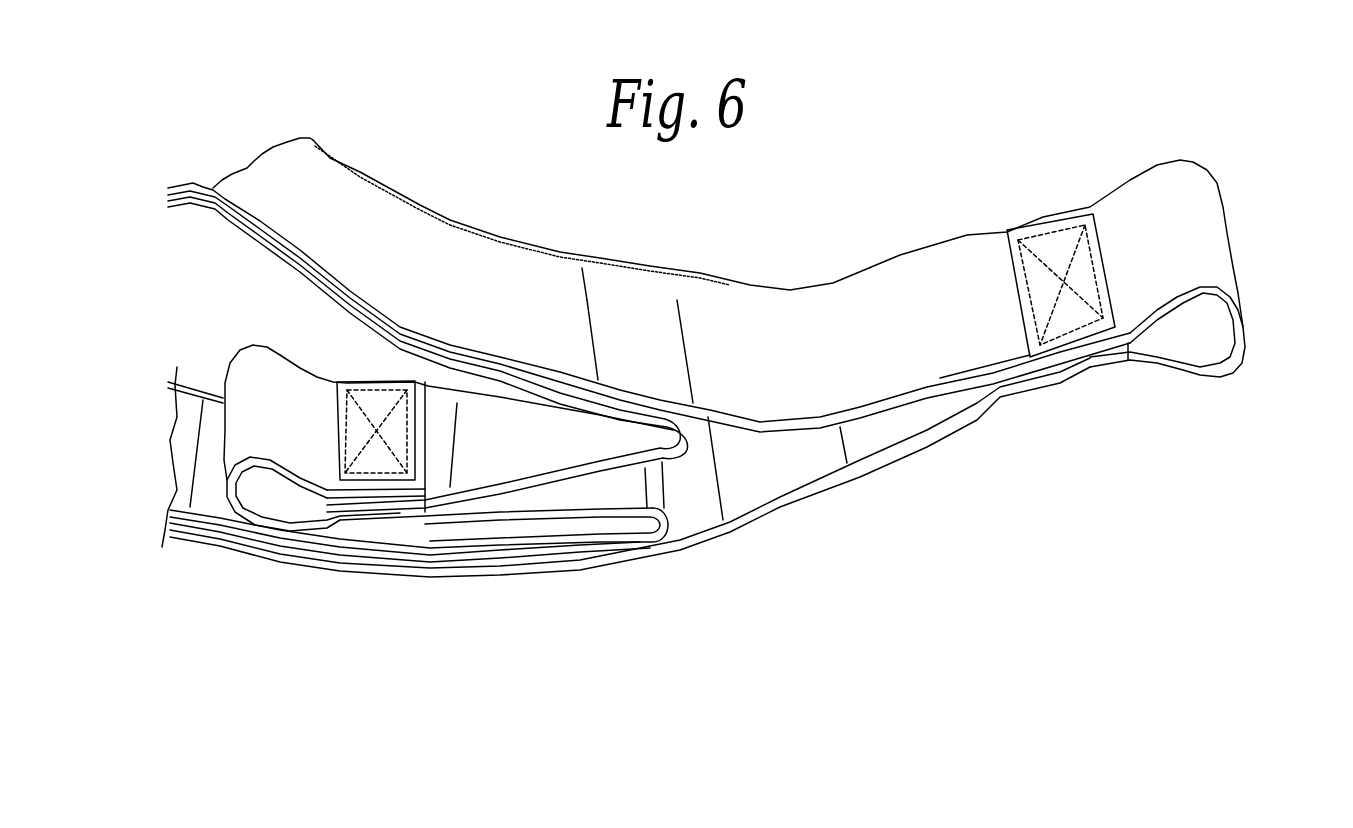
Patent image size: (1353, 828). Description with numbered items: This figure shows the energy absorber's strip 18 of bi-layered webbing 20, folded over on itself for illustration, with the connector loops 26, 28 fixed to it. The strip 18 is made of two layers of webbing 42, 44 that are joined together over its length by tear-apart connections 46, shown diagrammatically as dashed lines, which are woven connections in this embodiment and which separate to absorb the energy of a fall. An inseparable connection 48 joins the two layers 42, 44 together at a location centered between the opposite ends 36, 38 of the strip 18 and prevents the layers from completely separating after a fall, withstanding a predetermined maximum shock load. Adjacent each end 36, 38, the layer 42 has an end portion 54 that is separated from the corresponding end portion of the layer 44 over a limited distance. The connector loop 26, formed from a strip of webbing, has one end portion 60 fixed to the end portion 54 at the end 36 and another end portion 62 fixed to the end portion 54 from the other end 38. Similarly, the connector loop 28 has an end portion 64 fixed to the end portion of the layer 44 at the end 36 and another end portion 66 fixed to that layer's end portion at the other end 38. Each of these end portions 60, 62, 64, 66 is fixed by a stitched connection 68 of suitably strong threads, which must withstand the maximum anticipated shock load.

The strip 18 is at (705, 326).
The bi-layered webbing 20 is at (310, 151).
The connector loop 26 is at (1208, 279).
The connector loop 28 is at (426, 406).
The end of the strip 36 is at (717, 286).
The end of the strip 38 is at (599, 656).
The layer of webbing 42 is at (529, 255).
The layer of webbing 44 is at (135, 457).
The tear-apart connections 46 is at (318, 333).
The inseparable connection 48 is at (419, 578).
The end portion of the layer 54 is at (630, 379).
The end portion of the connector loop 60 is at (1061, 232).
The end portion of the connector loop 62 is at (630, 472).
The end portion of the connector loop 64 is at (365, 415).
The end portion of the connector loop 66 is at (517, 558).
The stitched connection 68 is at (671, 296).